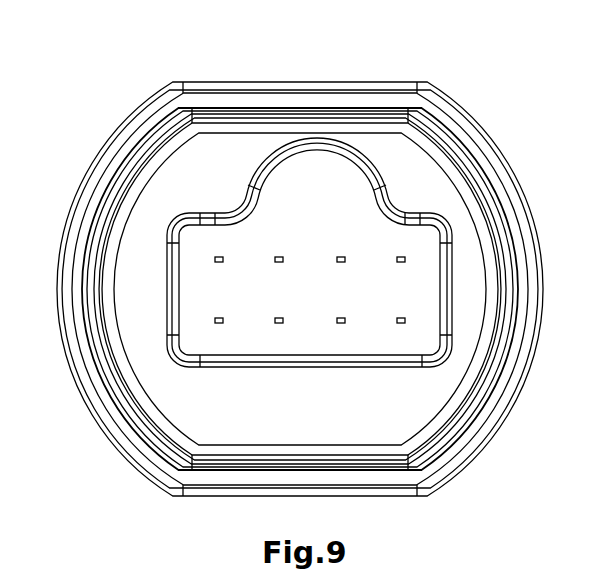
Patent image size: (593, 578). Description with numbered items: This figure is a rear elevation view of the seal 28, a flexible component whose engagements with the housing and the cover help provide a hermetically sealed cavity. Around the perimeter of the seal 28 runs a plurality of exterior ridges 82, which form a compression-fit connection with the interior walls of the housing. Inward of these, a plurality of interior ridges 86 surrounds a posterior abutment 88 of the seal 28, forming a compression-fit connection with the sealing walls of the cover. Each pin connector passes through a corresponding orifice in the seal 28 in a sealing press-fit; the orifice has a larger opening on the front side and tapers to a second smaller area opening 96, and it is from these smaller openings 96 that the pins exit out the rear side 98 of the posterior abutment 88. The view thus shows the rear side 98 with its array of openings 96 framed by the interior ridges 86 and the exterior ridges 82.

The seal 28 is at (307, 269).
The exterior ridges 82 is at (468, 463).
The interior ridges 86 is at (167, 317).
The posterior abutment 88 is at (282, 198).
The second smaller area opening 96 is at (401, 256).
The rear side 98 is at (497, 453).